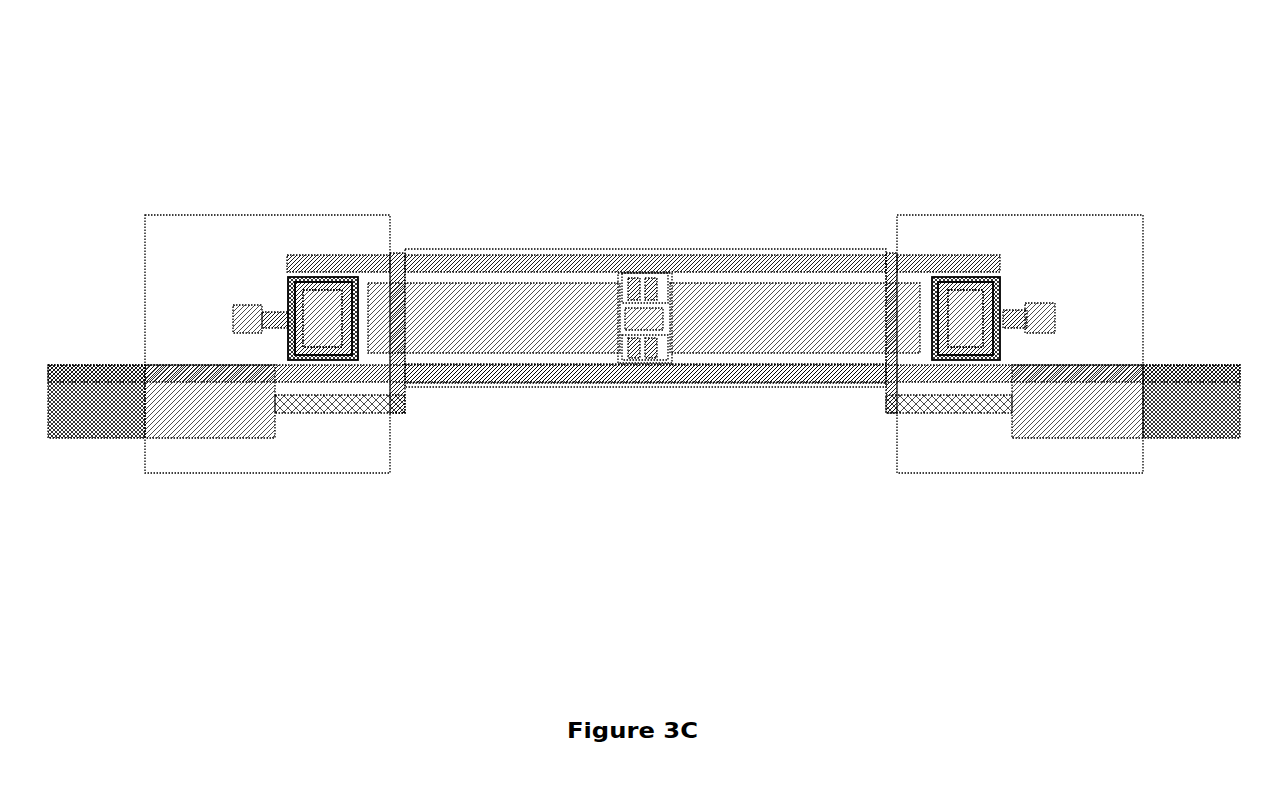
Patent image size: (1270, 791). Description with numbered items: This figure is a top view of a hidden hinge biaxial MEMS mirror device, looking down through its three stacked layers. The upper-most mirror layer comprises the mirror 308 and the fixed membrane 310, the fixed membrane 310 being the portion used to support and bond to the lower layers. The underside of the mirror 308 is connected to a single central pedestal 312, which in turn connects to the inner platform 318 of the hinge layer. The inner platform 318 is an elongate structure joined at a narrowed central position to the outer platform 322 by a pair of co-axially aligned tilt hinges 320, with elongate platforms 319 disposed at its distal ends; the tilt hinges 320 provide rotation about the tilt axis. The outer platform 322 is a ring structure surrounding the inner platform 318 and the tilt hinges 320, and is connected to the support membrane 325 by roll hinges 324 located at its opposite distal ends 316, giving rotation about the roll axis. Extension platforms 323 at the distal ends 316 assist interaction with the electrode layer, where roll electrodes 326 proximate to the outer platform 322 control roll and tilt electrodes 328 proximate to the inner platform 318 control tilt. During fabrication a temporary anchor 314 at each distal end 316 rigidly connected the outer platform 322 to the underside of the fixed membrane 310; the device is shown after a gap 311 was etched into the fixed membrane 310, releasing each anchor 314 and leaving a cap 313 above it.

The mirror 308 is at (430, 248).
The fixed membrane 310 is at (265, 457).
The gap 311 is at (338, 277).
The pedestal 312 is at (648, 315).
The cap 313 is at (350, 345).
The temporary anchor 314 is at (310, 323).
The distal end of the outer platform 316 is at (288, 278).
The inner platform 318 is at (604, 302).
The elongate platform 319 is at (890, 273).
The tilt hinge 320 is at (645, 277).
The outer platform 322 is at (760, 262).
The extension platform 323 is at (58, 428).
The roll hinge 324 is at (268, 312).
The support membrane 325 is at (235, 322).
The roll electrode 326 is at (72, 390).
The tilt electrode 328 is at (517, 305).